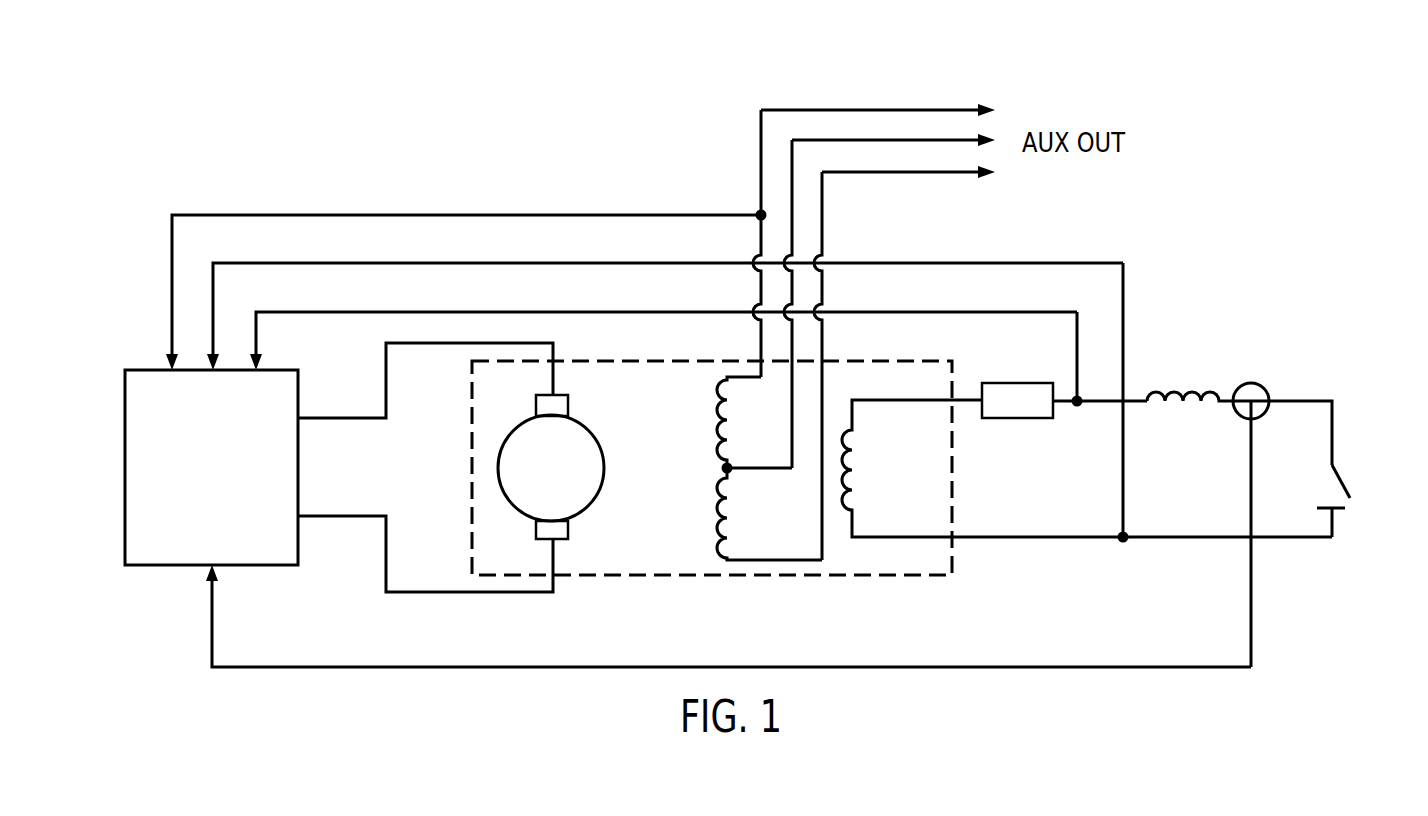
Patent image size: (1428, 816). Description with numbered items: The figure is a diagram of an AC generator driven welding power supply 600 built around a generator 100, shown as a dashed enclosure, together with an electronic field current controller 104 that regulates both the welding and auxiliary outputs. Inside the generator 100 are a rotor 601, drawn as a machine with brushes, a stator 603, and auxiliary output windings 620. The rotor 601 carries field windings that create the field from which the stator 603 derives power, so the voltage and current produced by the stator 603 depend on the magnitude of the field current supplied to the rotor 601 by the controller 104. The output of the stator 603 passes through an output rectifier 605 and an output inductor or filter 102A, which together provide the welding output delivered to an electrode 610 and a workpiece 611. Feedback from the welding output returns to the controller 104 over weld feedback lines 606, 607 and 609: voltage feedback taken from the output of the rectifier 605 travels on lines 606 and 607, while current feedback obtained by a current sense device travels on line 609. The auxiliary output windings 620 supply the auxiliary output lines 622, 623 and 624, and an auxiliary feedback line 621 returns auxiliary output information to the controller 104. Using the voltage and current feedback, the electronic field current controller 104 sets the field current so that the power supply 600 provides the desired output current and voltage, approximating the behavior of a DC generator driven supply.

The generator 100 is at (953, 361).
The output inductor 102A is at (1174, 392).
The electronic field current controller 104 is at (142, 368).
The AC generator driven power supply 600 is at (1212, 298).
The rotor 601 is at (590, 433).
The stator 603 is at (850, 474).
The output rectifier 605 is at (1015, 418).
The weld feedback line 606 is at (561, 262).
The weld feedback line 607 is at (641, 308).
The weld feedback line 609 is at (932, 668).
The electrode 610 is at (1344, 487).
The workpiece 611 is at (1340, 508).
The auxiliary output windings 620 is at (717, 393).
The auxiliary feedback line 621 is at (463, 214).
The auxiliary output line 622 is at (874, 110).
The auxiliary output line 623 is at (888, 141).
The auxiliary output line 624 is at (897, 173).